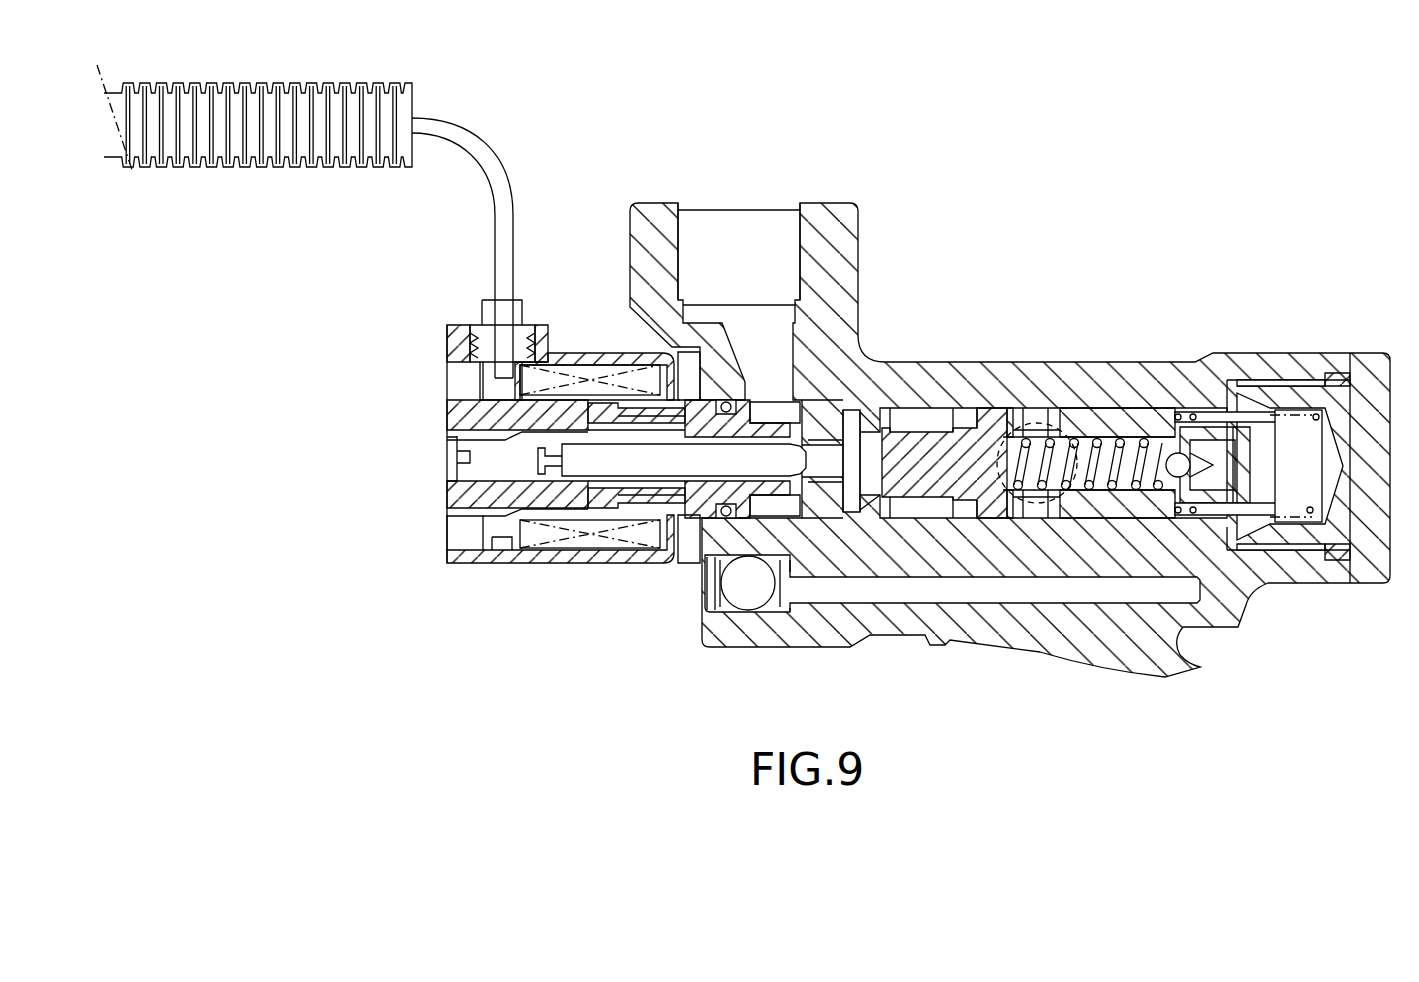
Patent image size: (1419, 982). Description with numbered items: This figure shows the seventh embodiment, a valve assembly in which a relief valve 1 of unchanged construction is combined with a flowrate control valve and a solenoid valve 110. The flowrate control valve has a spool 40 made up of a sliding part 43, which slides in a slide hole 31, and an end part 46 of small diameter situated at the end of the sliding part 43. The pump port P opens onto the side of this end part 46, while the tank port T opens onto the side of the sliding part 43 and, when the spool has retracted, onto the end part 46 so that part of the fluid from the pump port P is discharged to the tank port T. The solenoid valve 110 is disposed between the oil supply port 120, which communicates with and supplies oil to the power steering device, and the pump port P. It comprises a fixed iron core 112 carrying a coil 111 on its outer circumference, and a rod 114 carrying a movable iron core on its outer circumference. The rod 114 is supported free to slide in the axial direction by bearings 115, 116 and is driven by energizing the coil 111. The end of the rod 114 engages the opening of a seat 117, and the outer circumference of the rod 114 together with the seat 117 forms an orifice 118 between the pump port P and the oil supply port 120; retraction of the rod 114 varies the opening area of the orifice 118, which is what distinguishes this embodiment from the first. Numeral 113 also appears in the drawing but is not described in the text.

The relief valve 1 is at (1140, 437).
The slide hole 31 is at (1078, 520).
The spool 40 is at (1203, 563).
The sliding part 43 is at (1000, 515).
The end part 46 is at (913, 487).
The solenoid valve 110 is at (432, 357).
The coil 111 is at (530, 540).
The fixed iron core 112 is at (463, 496).
The sleeve 113 is at (650, 490).
The rod 114 is at (765, 462).
The bearing 115 is at (718, 502).
The bearing 116 is at (595, 488).
The seat 117 is at (833, 443).
The orifice 118 is at (800, 433).
The oil supply port 120 is at (765, 225).
The pump port P is at (950, 425).
The tank port T is at (1038, 408).